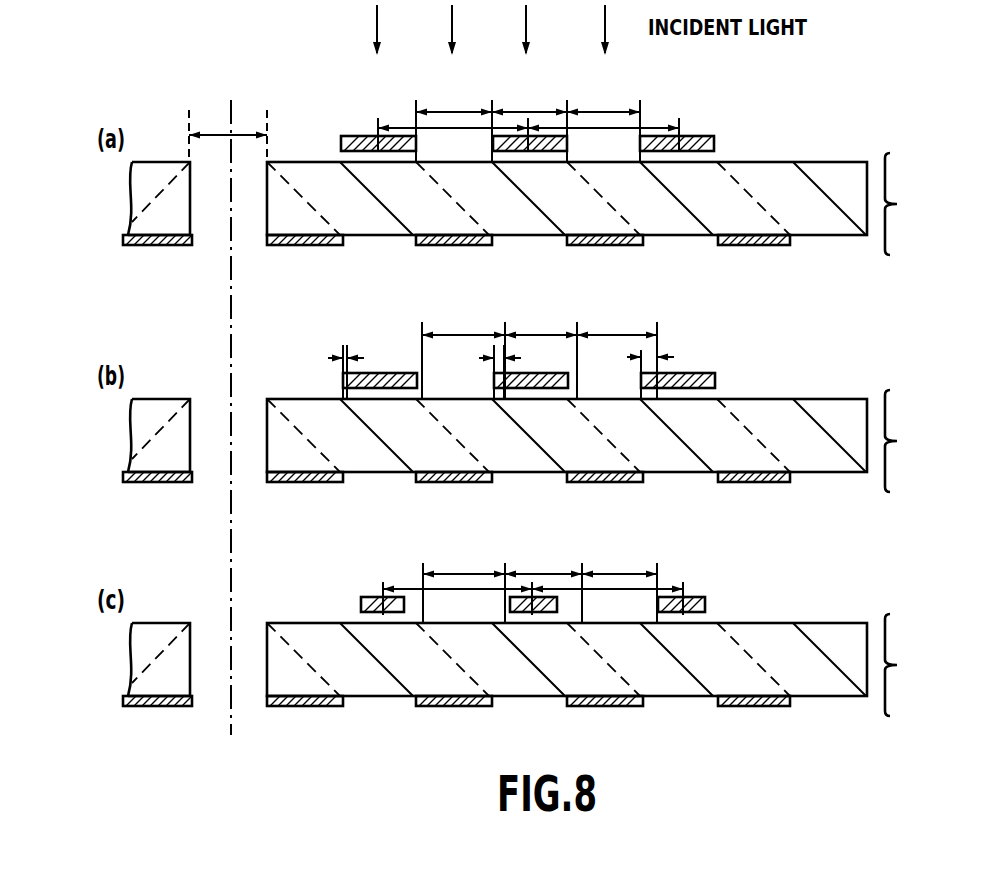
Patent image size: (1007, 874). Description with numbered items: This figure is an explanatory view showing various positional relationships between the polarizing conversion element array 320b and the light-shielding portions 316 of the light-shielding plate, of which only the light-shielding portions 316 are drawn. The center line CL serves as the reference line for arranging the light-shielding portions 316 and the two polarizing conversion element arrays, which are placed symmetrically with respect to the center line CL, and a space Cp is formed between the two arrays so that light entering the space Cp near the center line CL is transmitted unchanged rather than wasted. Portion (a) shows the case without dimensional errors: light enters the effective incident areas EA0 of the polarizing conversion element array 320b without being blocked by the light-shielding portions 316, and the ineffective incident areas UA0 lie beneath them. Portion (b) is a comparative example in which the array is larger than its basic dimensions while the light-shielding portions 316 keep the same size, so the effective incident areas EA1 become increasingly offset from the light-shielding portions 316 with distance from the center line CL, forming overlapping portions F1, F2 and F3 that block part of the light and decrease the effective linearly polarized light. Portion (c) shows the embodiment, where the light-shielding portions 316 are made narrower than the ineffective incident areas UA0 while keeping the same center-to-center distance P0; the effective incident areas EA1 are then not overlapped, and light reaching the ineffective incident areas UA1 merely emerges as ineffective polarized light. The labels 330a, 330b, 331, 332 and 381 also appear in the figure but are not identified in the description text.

The light-shielding portions 316 is at (692, 135).
The polarizing conversion element array 320b is at (897, 204).
The substrate 330a is at (130, 210).
The substrate 330b is at (766, 162).
The hidden edge line 331 is at (733, 179).
The edge line 332 is at (672, 194).
The pixel electrode 381 is at (768, 245).
The space Cp is at (236, 135).
The center line CL is at (230, 718).
The distance between centers of the light-shielding portions P0 is at (405, 128).
The effective incident areas EA0 is at (528, 96).
The ineffective incident areas UA0 is at (529, 96).
The effective incident areas EA1 is at (539, 441).
The ineffective incident areas UA1 is at (543, 441).
The overlapping portion F1 is at (328, 358).
The overlapping portion F2 is at (480, 358).
The overlapping portion F3 is at (628, 357).